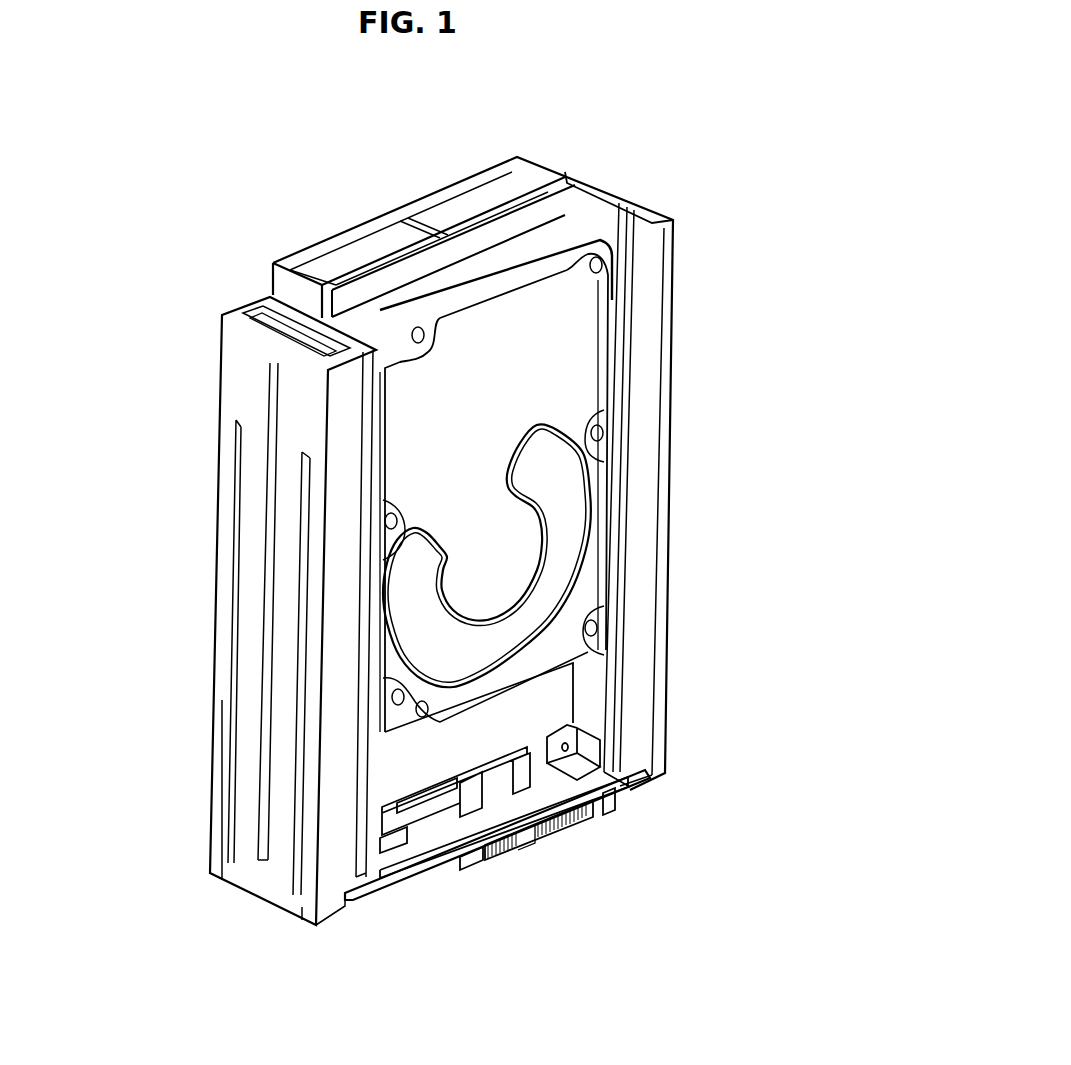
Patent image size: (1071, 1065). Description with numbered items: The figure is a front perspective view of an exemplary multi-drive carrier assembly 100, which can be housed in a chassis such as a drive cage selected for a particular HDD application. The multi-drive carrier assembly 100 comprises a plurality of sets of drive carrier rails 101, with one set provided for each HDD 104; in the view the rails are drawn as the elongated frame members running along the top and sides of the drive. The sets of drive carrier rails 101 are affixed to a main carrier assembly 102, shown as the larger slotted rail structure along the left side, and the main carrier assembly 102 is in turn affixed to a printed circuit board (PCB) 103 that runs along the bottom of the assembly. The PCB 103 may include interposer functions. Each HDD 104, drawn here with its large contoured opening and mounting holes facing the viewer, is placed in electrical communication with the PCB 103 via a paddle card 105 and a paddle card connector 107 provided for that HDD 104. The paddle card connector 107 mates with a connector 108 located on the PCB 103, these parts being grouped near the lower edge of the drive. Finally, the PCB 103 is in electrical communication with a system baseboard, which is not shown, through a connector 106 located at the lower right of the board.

The multi-drive carrier assembly 100 is at (591, 60).
The drive carrier rails 101 is at (272, 268).
The main carrier assembly 102 is at (215, 400).
The printed circuit board 103 is at (440, 867).
The HDD 104 is at (485, 573).
The paddle card 105 is at (407, 775).
The connector 106 is at (585, 822).
The paddle card connector 107 is at (418, 803).
The connector 108 is at (418, 825).